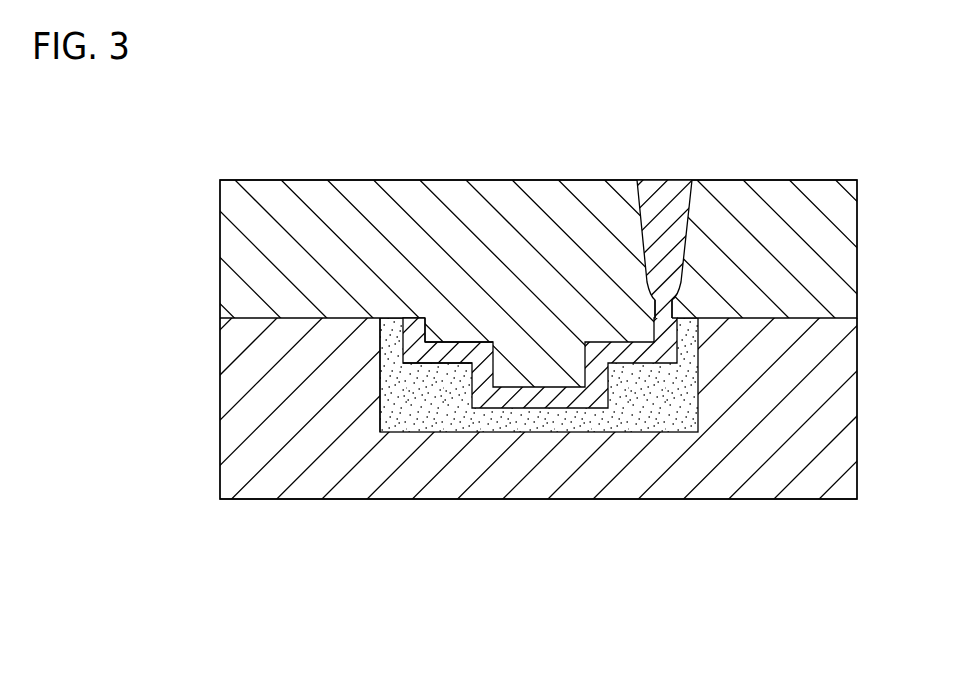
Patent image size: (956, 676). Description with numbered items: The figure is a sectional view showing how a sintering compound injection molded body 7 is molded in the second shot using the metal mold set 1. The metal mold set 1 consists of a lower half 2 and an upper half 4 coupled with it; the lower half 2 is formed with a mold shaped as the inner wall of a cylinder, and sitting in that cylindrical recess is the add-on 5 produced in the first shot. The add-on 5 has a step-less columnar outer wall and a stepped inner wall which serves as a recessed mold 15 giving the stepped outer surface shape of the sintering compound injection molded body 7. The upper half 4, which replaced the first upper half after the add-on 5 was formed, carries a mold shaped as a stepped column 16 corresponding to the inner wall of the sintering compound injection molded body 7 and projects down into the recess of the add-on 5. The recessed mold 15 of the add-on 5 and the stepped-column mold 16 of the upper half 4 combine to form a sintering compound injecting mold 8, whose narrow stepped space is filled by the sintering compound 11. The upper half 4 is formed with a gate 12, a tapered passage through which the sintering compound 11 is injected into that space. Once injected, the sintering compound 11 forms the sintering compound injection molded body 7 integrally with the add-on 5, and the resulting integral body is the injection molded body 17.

The metal mold set 1 is at (760, 532).
The lower half 2 is at (652, 500).
The upper half 4 is at (363, 181).
The add-on 5 is at (420, 402).
The sintering compound injection molded body 7 is at (488, 393).
The sintering compound injecting mold 8 is at (432, 119).
The sintering compound 11 is at (663, 193).
The gate 12 is at (677, 309).
The recessed mold 15 is at (428, 350).
The mold shaped as a stepped column 16 is at (447, 343).
The injection molded body 17 is at (378, 383).